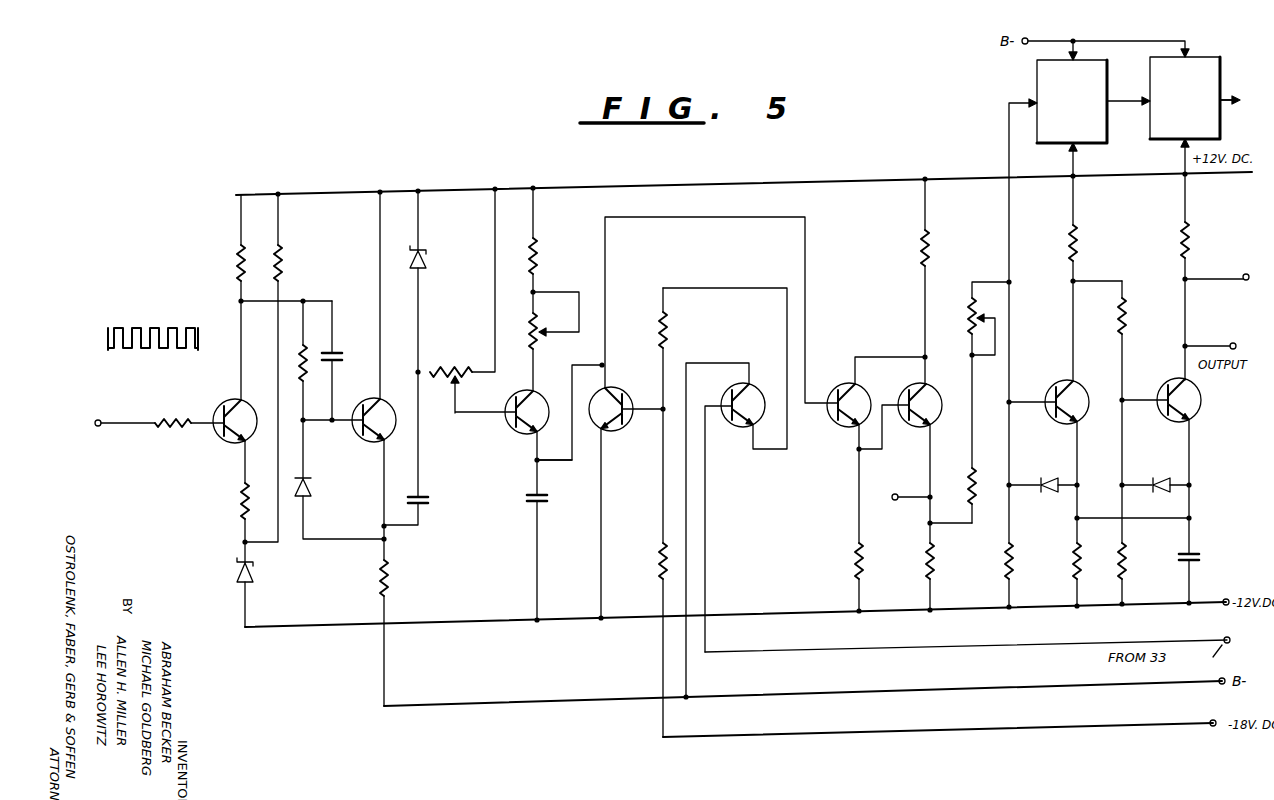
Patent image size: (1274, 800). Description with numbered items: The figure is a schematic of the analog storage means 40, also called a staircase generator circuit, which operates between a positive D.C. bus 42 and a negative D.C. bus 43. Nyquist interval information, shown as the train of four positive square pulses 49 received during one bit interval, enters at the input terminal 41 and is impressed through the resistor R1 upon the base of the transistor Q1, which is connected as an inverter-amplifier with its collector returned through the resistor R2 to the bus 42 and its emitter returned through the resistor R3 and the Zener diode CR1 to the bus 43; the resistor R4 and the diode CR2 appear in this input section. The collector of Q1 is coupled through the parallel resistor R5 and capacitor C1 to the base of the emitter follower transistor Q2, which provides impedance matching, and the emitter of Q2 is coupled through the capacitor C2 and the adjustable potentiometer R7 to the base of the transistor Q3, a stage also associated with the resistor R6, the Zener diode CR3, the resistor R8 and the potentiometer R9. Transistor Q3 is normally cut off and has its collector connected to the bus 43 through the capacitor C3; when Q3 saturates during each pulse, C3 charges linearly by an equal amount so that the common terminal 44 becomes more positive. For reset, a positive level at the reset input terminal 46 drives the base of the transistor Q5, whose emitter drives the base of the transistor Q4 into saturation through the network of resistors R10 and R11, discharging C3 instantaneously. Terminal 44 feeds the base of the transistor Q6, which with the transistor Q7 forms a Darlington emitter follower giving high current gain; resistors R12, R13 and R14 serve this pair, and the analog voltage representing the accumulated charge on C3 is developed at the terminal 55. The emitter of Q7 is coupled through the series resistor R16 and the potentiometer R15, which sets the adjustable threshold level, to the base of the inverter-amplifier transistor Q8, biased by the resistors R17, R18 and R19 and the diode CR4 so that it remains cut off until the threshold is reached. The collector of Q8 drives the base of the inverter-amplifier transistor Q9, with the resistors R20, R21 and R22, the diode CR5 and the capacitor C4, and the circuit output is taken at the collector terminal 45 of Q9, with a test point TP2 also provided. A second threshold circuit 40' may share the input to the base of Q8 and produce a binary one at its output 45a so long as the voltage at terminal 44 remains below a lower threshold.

The analog storage means 40 is at (414, 152).
The second threshold circuit 40' is at (1072, 101).
The input terminal 41 is at (98, 427).
The positive D.C. bus 42 is at (322, 193).
The negative D.C. bus 43 is at (350, 628).
The common terminal 44 is at (536, 462).
The output terminal 45 is at (1242, 337).
The output of second threshold circuit 45a is at (1244, 102).
The reset input terminal 46 is at (1225, 637).
The positive square pulses 49 is at (150, 327).
The analog voltage output terminal 55 is at (905, 484).
The test point 2 TP2 is at (1246, 273).
The resistor R1 is at (183, 430).
The resistor R2 is at (235, 265).
The resistor R3 is at (237, 503).
The resistor R4 is at (284, 263).
The resistor R5 is at (299, 378).
The resistor R6 is at (378, 580).
The adjustable potentiometer R7 is at (470, 371).
The resistor R8 is at (549, 256).
The potentiometer R9 is at (529, 332).
The resistor R10 is at (669, 326).
The resistor R11 is at (659, 550).
The resistor R12 is at (853, 560).
The resistor R13 is at (919, 255).
The resistor R14 is at (925, 560).
The potentiometer R15 is at (968, 322).
The resistor R16 is at (968, 496).
The resistor R17 is at (1005, 563).
The resistor R18 is at (1067, 253).
The resistor R19 is at (1072, 560).
The resistor R20 is at (1128, 318).
The resistor R21 is at (1129, 562).
The resistor R22 is at (1178, 241).
The capacitor C1 is at (342, 348).
The capacitor C2 is at (430, 503).
The capacitor C3 is at (549, 497).
The capacitor C4 is at (1205, 562).
The Zener diode CR1 is at (236, 576).
The diode CR2 is at (312, 490).
The zener diode CR3 is at (439, 260).
The diode CR4 is at (1063, 470).
The diode CR5 is at (1168, 464).
The transistor Q1 is at (250, 434).
The transistor Q2 is at (362, 437).
The transistor Q3 is at (510, 432).
The transistor Q4 is at (615, 432).
The transistor Q5 is at (722, 424).
The transistor Q6 is at (826, 424).
The transistor Q7 is at (900, 424).
The transistor Q8 is at (1064, 381).
The transistor Q9 is at (1197, 408).